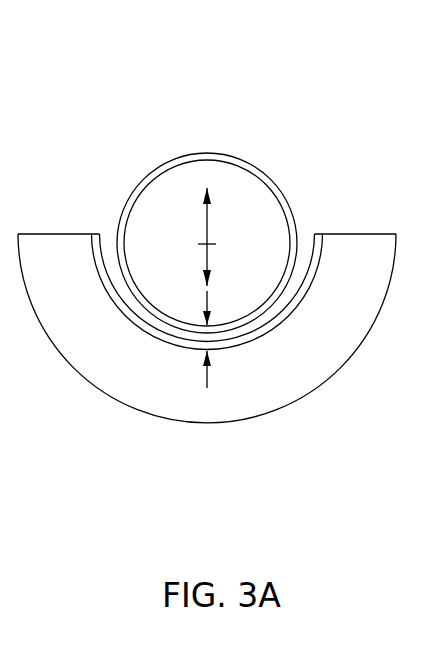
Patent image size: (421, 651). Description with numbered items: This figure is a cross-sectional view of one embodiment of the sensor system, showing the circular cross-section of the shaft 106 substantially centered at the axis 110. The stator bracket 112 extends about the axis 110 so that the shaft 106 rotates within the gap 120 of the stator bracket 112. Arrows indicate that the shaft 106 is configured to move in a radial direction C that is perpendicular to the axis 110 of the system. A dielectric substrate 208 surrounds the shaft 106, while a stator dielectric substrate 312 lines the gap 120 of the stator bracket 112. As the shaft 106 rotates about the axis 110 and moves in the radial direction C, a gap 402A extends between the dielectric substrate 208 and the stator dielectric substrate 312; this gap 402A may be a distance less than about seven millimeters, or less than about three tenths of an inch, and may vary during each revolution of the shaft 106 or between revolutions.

The radial direction C is at (205, 262).
The shaft 106 is at (260, 223).
The axis 110 is at (212, 244).
The stator bracket 112 is at (123, 385).
The gap 120 is at (306, 253).
The dielectric substrate 208 is at (205, 152).
The stator dielectric substrate 312 is at (273, 325).
The gap 402A is at (207, 342).